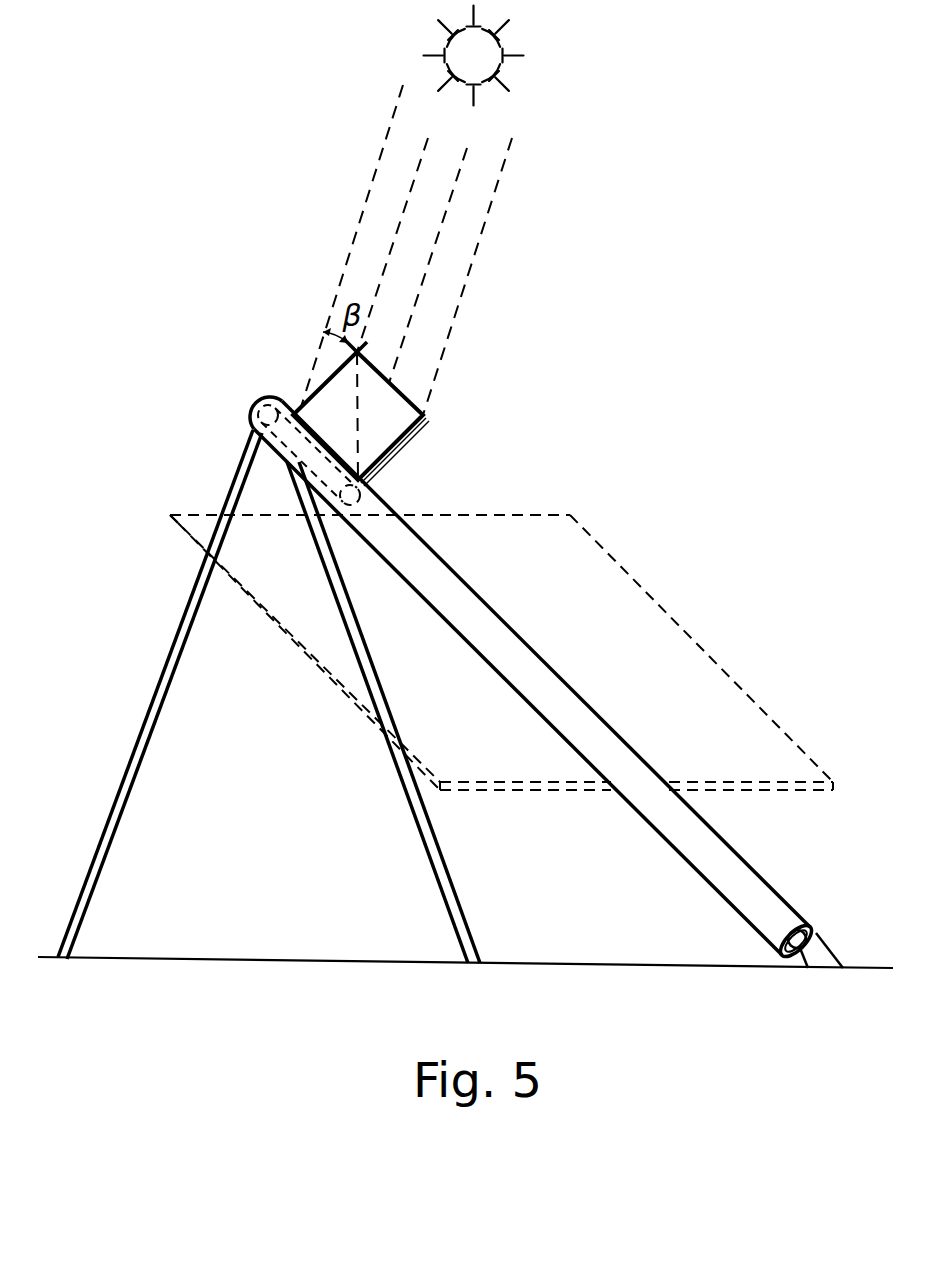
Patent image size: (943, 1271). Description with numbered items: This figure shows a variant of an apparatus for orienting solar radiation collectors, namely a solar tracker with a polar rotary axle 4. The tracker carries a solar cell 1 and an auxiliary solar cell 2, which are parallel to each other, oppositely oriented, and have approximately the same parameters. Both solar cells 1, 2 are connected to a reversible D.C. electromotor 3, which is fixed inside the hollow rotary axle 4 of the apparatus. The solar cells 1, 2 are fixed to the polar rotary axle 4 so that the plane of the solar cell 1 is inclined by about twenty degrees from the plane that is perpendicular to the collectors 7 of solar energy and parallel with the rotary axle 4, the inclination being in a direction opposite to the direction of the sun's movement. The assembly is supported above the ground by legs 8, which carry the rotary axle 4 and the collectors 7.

The solar cell 1 is at (388, 430).
The auxiliary solar cell 2 is at (420, 432).
The reversible D.C. electromotor 3 is at (248, 408).
The polar rotary axle 4 is at (773, 882).
The collectors of solar energy 7 is at (755, 705).
The support legs 8 is at (103, 858).